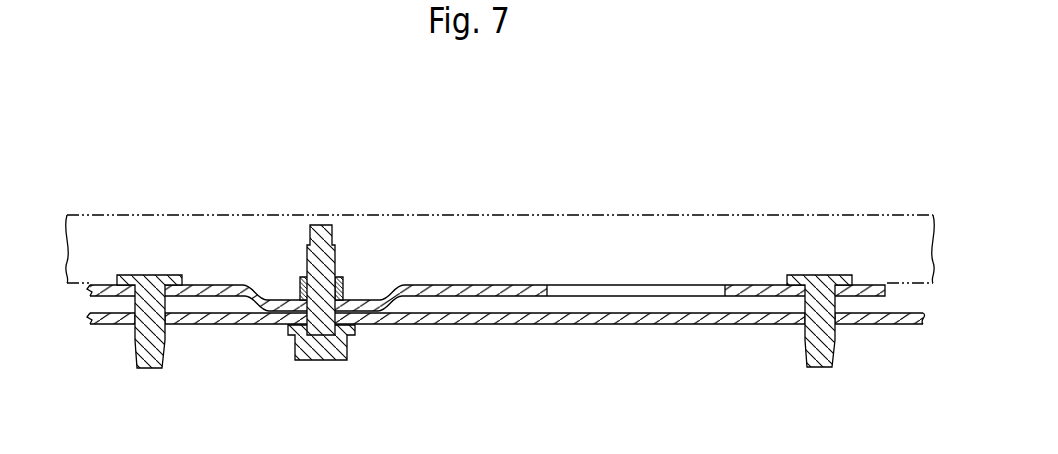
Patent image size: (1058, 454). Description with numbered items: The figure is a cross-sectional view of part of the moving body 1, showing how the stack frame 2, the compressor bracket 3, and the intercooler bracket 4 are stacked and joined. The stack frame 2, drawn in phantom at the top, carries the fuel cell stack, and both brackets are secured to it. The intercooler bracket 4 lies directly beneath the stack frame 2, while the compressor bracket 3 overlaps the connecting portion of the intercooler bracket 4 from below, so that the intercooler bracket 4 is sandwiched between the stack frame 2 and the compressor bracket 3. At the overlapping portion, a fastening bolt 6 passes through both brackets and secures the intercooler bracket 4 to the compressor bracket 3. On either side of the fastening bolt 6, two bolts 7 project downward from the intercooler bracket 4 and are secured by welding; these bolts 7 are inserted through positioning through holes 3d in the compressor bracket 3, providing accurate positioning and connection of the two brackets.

The moving body 1 is at (225, 148).
The stack frame 2 is at (532, 230).
The compressor bracket 3 is at (617, 317).
The positioning through holes 3d is at (167, 315).
The intercooler bracket 4 is at (490, 290).
The fastening bolt 6 is at (330, 352).
The bolts 7 is at (155, 360).